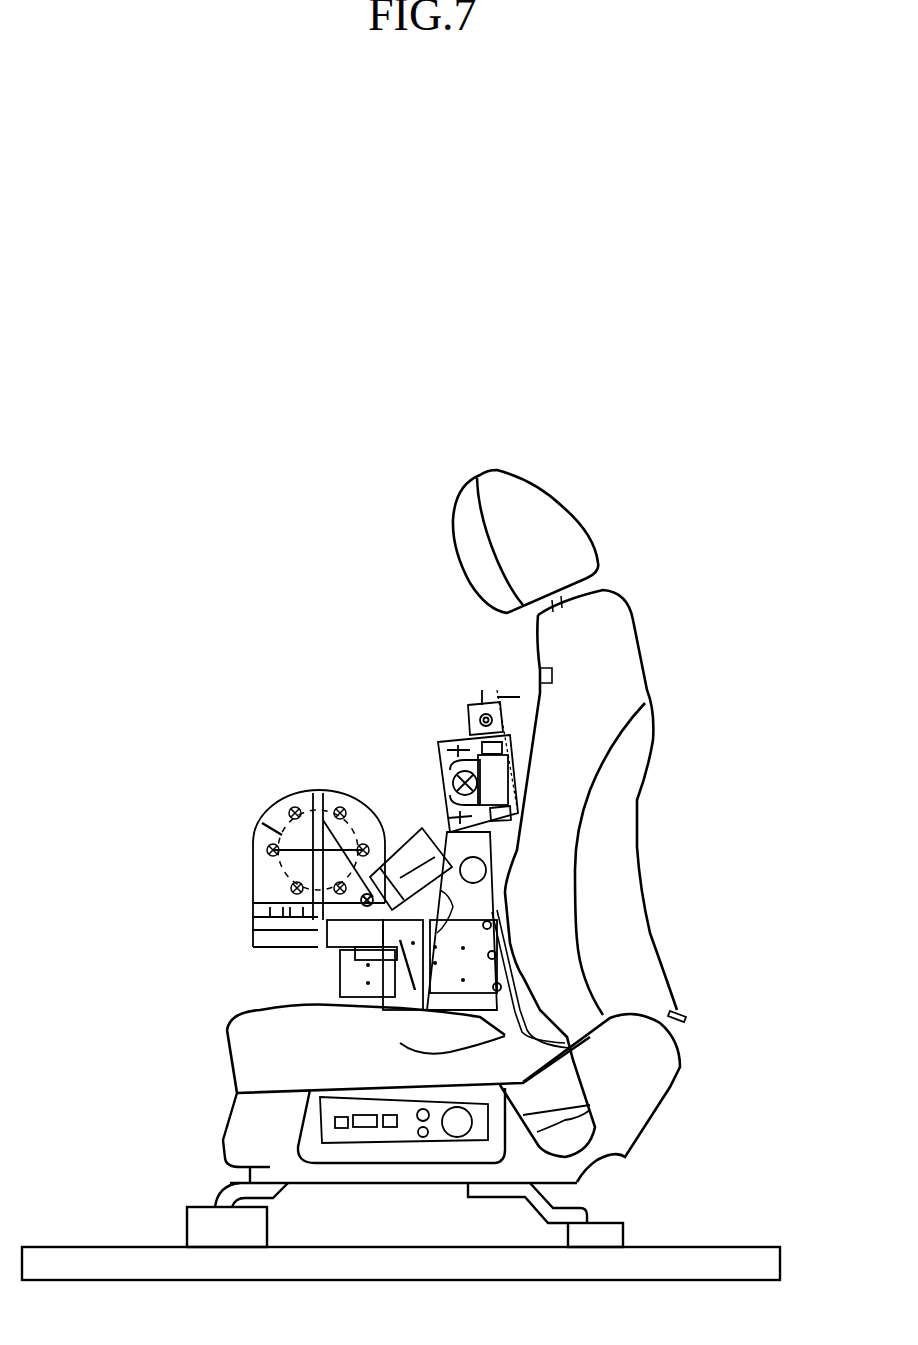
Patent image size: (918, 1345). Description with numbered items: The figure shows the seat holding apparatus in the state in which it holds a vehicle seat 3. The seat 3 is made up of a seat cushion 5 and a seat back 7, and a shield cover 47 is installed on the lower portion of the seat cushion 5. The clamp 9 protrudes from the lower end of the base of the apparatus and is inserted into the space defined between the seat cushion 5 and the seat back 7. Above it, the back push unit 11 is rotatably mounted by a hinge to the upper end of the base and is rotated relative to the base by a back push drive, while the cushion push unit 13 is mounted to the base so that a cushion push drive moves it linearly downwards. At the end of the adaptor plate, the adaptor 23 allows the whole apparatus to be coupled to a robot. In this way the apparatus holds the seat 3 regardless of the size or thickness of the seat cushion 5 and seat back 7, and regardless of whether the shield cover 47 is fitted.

The seat 3 is at (797, 775).
The seat cushion 5 is at (497, 1040).
The seat back 7 is at (610, 820).
The clamp 9 is at (686, 1014).
The back push unit 11 is at (462, 684).
The cushion push unit 13 is at (297, 812).
The adaptor 23 is at (262, 818).
The shield cover 47 is at (243, 1130).